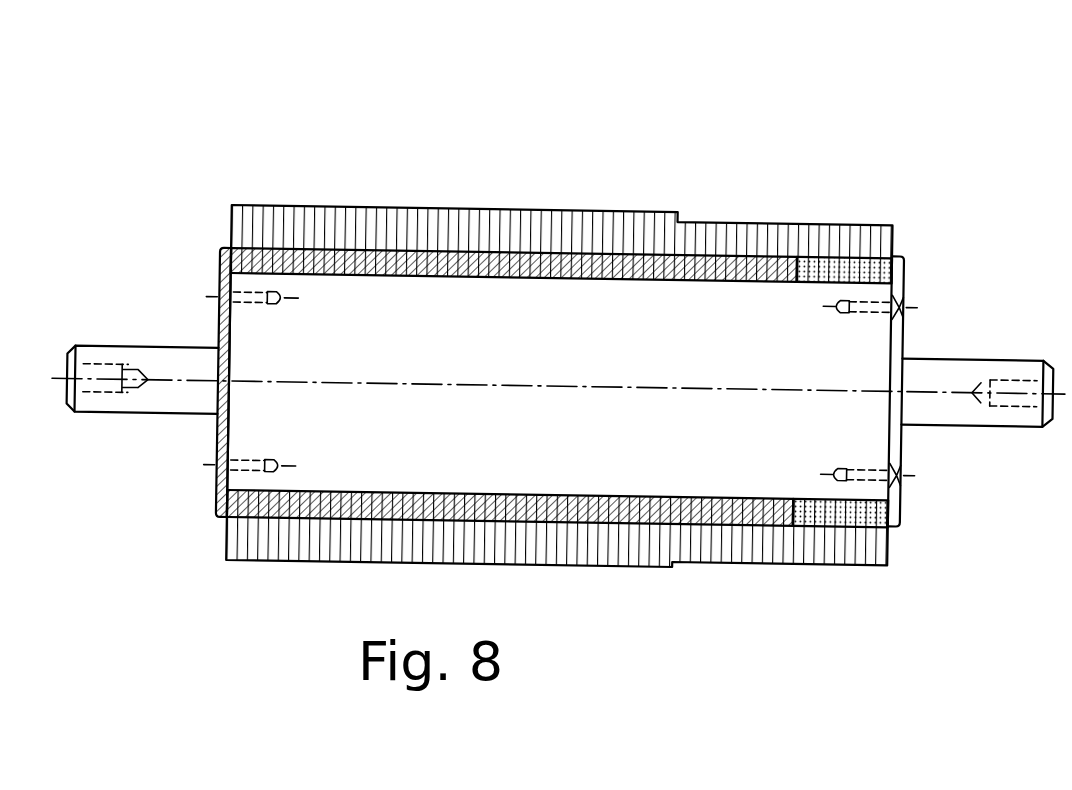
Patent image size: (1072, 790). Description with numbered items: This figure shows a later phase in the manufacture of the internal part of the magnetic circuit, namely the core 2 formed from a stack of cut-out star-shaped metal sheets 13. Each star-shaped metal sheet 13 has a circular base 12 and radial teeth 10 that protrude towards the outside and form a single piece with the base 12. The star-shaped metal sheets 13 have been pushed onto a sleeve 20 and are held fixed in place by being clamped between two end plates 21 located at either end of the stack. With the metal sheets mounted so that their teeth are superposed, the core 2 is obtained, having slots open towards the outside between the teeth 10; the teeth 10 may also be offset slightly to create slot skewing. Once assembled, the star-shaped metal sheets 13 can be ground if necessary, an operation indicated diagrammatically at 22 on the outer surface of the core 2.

The core 2 is at (203, 232).
The radial teeth 10 is at (535, 213).
The circular base 12 is at (772, 270).
The star-shaped metal sheet 13 is at (425, 200).
The sleeve 20 is at (270, 345).
The end plates 21 is at (212, 490).
The grinding 22 is at (678, 217).